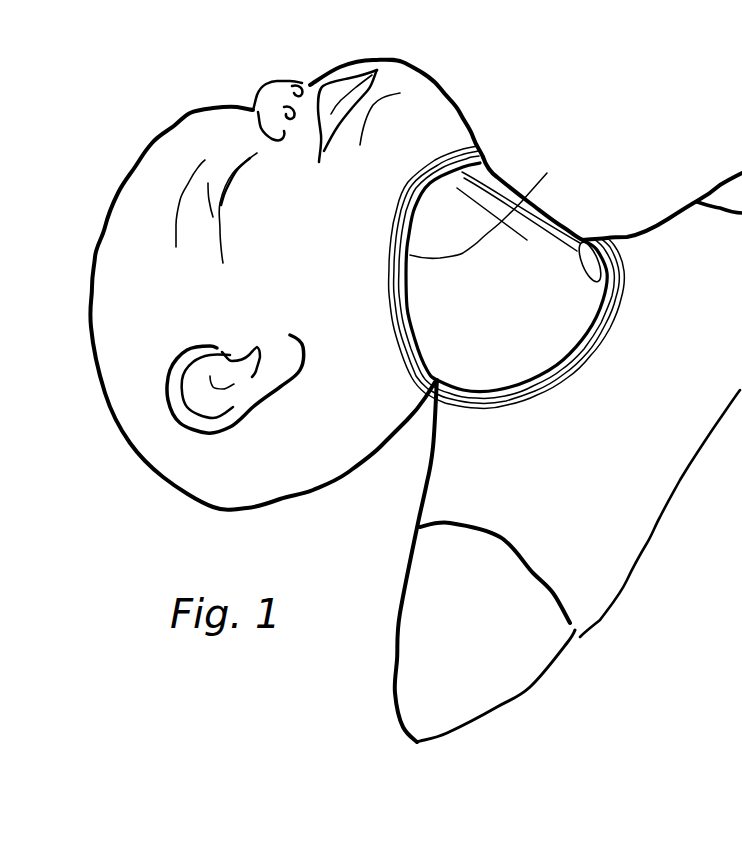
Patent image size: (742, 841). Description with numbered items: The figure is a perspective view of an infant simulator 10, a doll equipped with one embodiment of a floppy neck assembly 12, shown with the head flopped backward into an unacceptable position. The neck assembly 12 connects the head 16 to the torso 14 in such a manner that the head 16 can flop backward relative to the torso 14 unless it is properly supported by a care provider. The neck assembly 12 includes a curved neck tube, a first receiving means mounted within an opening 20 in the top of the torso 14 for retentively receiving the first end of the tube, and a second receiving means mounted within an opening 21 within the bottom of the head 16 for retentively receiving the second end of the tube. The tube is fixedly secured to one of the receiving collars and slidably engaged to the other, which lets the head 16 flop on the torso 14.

The infant simulator 10 is at (540, 248).
The neck assembly 12 is at (507, 200).
The torso 14 is at (433, 495).
The head 16 is at (397, 58).
The opening in the top of the torso 20 is at (595, 234).
The opening within the bottom of the head 21 is at (500, 220).